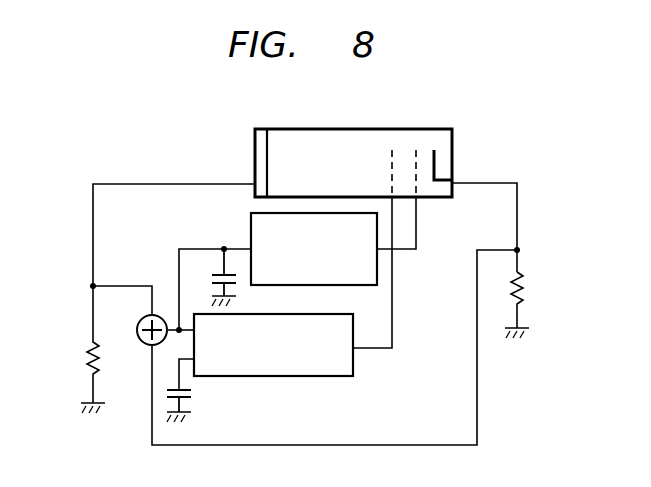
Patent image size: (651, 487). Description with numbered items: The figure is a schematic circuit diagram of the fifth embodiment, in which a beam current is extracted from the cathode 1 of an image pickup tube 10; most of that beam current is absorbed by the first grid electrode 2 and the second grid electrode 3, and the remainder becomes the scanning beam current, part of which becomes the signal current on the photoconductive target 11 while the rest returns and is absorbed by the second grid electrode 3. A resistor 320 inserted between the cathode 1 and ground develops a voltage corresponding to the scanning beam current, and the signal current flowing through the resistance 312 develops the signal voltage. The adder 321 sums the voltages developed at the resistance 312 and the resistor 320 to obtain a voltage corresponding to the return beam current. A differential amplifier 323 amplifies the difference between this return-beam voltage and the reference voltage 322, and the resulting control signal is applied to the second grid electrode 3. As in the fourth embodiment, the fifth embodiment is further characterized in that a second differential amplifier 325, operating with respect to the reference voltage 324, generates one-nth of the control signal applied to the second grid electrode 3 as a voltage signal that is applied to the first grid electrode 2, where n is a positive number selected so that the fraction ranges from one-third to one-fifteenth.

The cathode 1 is at (434, 150).
The first grid electrode 2 is at (416, 150).
The second grid electrode 3 is at (392, 150).
The image pickup tube 10 is at (338, 129).
The photoconductive target 11 is at (266, 129).
The resistance 312 is at (88, 357).
The resistor 320 is at (524, 290).
The adder 321 is at (141, 348).
The reference voltage 322 is at (192, 393).
The differential amplifier 323 is at (354, 366).
The reference voltage 324 is at (238, 284).
The differential amplifier 325 is at (251, 227).